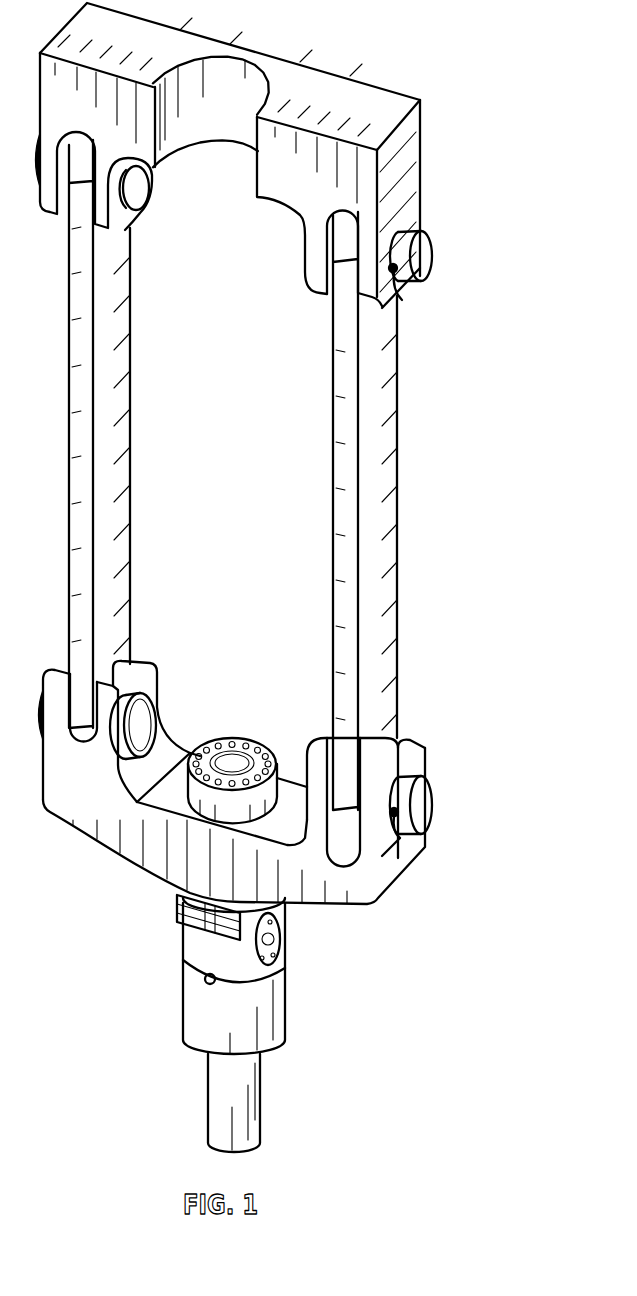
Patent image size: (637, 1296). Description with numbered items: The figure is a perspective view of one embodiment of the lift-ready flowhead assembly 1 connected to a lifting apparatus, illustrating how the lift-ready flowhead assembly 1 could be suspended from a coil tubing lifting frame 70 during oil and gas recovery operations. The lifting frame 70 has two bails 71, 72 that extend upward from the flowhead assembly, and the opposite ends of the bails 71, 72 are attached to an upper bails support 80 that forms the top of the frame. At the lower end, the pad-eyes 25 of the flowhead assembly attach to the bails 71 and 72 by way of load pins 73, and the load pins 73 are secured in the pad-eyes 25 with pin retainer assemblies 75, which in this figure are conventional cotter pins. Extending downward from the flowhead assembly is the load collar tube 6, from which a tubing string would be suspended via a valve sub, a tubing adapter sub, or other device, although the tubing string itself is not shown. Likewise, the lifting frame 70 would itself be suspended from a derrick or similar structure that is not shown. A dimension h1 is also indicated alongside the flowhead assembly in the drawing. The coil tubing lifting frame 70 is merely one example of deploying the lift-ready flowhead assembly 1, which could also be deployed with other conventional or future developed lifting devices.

The lift-ready flowhead assembly 1 is at (318, 966).
The load collar tube 6 is at (262, 1112).
The pad-eyes 25 is at (152, 626).
The coil tubing lifting frame 70 is at (271, 453).
The bail 71 is at (130, 458).
The bail 72 is at (387, 523).
The load pins 73 is at (147, 722).
The pin retainer assemblies 75 is at (440, 804).
The upper bails support 80 is at (335, 93).
The height h1 is at (160, 812).